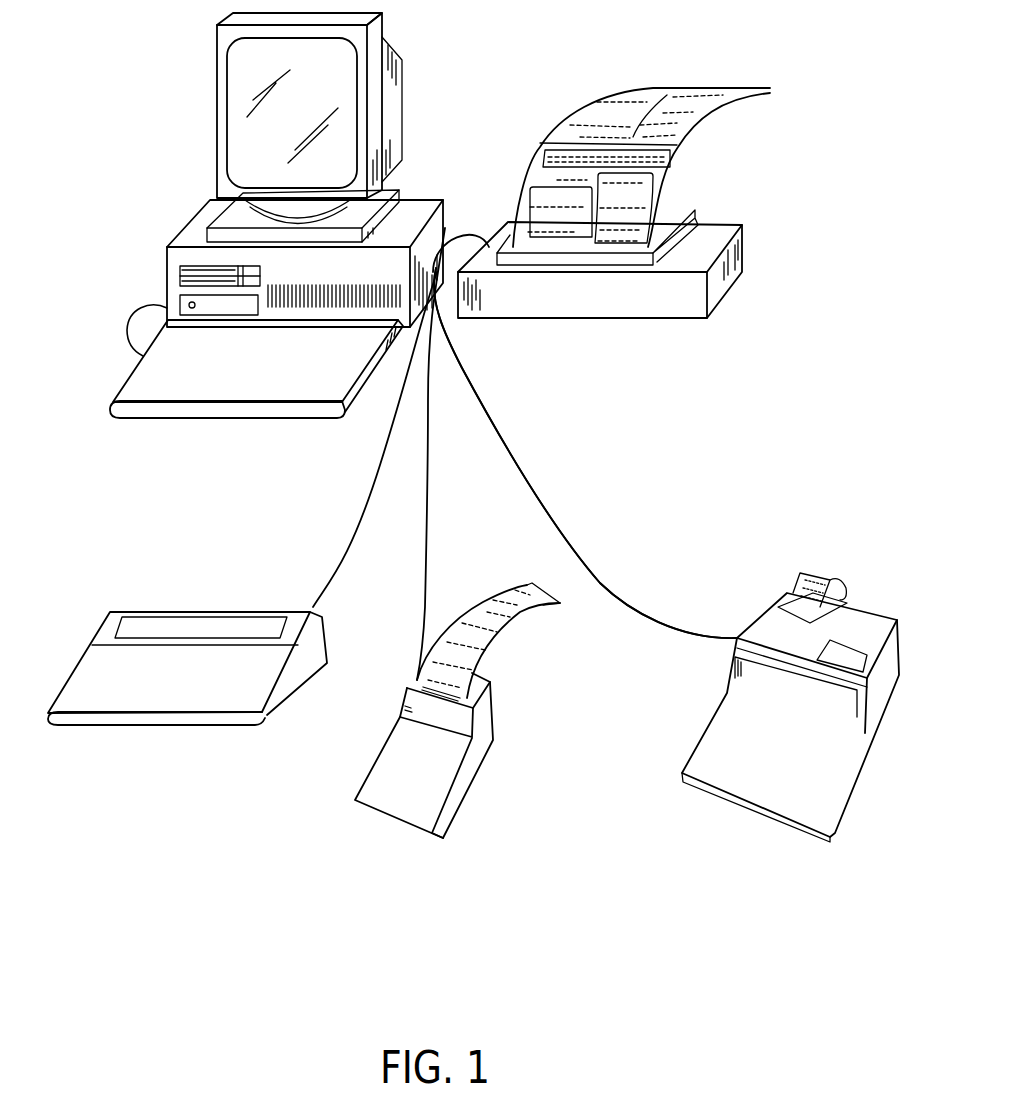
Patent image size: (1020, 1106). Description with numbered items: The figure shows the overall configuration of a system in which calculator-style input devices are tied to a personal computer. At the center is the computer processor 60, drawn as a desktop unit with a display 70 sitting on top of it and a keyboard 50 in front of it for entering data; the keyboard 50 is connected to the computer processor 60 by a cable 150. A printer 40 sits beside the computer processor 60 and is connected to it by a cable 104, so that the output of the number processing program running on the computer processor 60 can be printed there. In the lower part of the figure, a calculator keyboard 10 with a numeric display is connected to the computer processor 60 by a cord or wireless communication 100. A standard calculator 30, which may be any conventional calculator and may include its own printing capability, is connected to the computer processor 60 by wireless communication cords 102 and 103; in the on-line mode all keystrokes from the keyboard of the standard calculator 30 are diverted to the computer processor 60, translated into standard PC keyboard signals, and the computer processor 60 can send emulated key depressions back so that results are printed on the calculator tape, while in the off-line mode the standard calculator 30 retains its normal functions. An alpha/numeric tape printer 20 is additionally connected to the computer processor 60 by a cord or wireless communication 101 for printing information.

The calculator keyboard 10 is at (186, 612).
The alpha/numeric tape printer 20 is at (390, 738).
The standard calculator 30 is at (722, 688).
The printer 40 is at (724, 272).
The keyboard 50 is at (130, 375).
The computer processor 60 is at (165, 264).
The display 70 is at (217, 110).
The cord or wireless communication 100 is at (334, 582).
The cord or wireless communication 101 is at (428, 582).
The wireless communication cord 102 is at (533, 503).
The wireless communication cord 103 is at (585, 453).
The cable 104 is at (447, 243).
The cable 150 is at (129, 312).